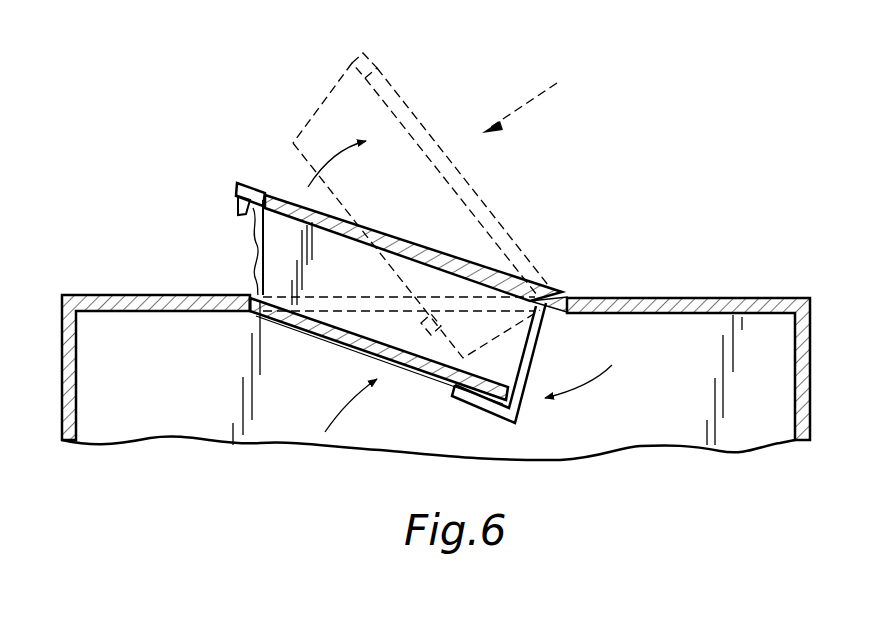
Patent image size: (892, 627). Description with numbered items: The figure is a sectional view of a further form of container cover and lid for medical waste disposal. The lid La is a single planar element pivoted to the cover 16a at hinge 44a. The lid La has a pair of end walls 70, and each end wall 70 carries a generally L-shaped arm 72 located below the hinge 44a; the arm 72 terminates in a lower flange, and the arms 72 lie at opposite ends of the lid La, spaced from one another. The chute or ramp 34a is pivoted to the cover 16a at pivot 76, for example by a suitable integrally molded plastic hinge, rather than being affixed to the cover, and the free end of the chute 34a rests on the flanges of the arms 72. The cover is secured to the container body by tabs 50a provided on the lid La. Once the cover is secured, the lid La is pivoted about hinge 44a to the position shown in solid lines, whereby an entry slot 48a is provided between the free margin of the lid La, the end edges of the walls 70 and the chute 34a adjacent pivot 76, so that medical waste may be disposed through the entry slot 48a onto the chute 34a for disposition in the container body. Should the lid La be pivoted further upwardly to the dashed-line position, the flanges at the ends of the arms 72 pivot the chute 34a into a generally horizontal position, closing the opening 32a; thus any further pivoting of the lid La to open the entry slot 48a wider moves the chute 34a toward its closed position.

The cover 16a is at (123, 295).
The hinge 44a is at (567, 298).
The opening 32a is at (377, 291).
The chute 34a is at (313, 334).
The tabs 50a is at (237, 184).
The entry slot 48a is at (257, 247).
The end walls 70 is at (272, 238).
The pivot 76 is at (250, 311).
The arm 72 is at (546, 334).
The lid La is at (428, 238).